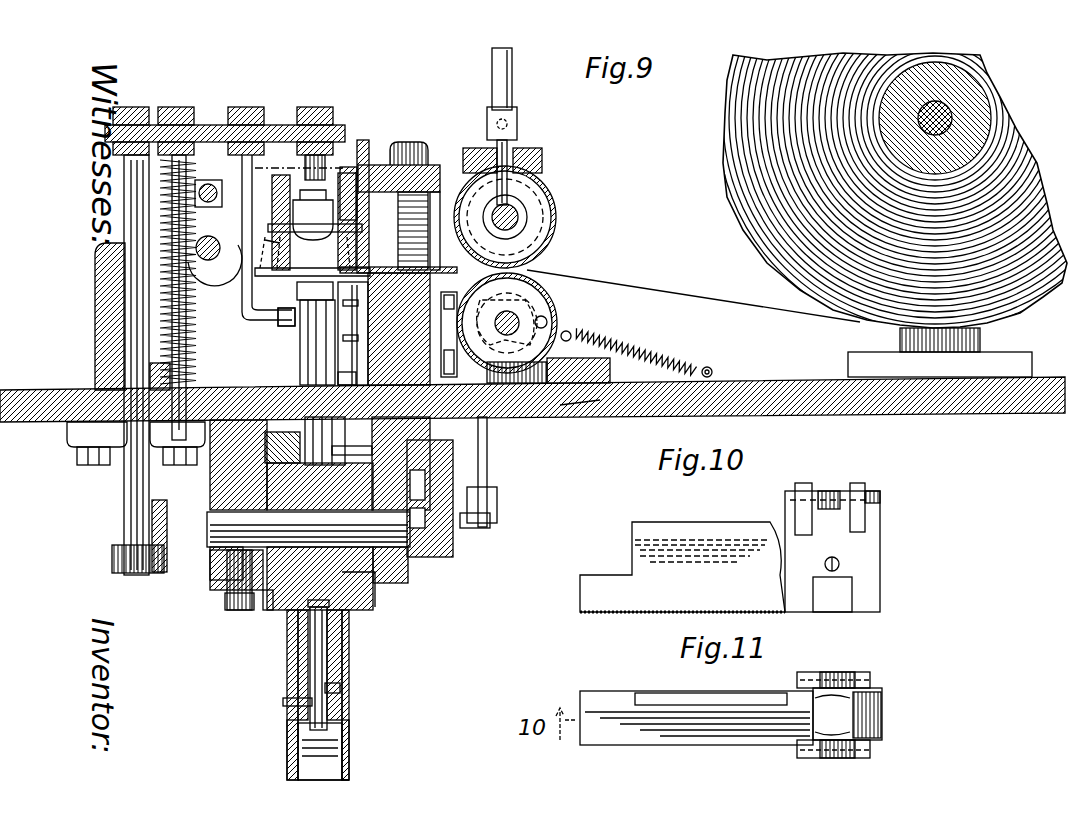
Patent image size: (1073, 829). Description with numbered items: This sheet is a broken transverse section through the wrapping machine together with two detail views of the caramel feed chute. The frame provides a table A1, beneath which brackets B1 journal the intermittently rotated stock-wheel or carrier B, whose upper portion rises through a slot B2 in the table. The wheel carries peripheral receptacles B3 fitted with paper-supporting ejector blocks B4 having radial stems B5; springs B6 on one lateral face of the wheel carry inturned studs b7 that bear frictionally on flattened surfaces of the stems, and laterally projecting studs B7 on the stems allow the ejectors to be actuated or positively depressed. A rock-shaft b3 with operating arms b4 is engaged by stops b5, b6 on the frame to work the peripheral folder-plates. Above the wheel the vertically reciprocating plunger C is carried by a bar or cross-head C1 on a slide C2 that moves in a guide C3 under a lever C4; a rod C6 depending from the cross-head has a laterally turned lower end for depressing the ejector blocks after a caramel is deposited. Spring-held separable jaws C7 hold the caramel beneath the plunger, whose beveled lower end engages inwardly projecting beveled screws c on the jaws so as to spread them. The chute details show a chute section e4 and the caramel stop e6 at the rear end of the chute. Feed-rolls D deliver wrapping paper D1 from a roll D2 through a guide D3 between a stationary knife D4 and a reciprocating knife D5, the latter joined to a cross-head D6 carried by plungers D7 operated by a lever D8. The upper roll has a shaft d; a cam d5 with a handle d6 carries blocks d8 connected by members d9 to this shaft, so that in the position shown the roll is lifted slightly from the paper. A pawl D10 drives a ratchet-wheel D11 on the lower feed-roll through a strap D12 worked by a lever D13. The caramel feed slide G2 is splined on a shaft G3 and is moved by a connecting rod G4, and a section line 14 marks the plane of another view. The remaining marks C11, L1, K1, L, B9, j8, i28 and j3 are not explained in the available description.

In FIG. 9, the table A1 is at (767, 380).
In FIG. 9, the roll D2 is at (740, 275).
In FIG. 9, the wrapping paper D1 is at (695, 298).
In FIG. 9, the bar C1 is at (300, 124).
In FIG. 9, the lever C4 is at (130, 549).
In FIG. 9, the shaft G3 is at (275, 240).
In FIG. 9, the member C6 is at (262, 316).
In FIG. 9, the vertically reciprocating slide C2 is at (132, 323).
In FIG. 9, the guide C3 is at (95, 374).
In FIG. 9, the connecting rod G4 is at (209, 186).
In FIG. 9, the slide G2 is at (212, 266).
In FIG. 9, the section line 14 is at (265, 189).
In FIG. 9, the plunger C is at (338, 165).
In FIG. 9, the inturned studs b7 is at (320, 234).
In FIG. 11, the inturned studs b7 is at (855, 718).
In FIG. 9, the clamp arm C11 is at (278, 243).
In FIG. 9, the vertically reciprocating knife D5 is at (369, 220).
In FIG. 9, the spring-held separable jaws C7 is at (362, 262).
In FIG. 10, the spring-held separable jaws C7 is at (840, 604).
In FIG. 9, the cross-head D6 is at (420, 168).
In FIG. 9, the plungers D7 is at (426, 231).
In FIG. 9, the guide D3 is at (438, 250).
In FIG. 9, the feed-rolls D is at (556, 206).
In FIG. 9, the shaft d is at (516, 218).
In FIG. 9, the handle d6 is at (512, 66).
In FIG. 9, the cam d5 is at (516, 112).
In FIG. 9, the blocks d8 is at (510, 126).
In FIG. 9, the members d9 is at (507, 156).
In FIG. 9, the pawl D10 is at (556, 313).
In FIG. 9, the ejector blocks B4 is at (316, 333).
In FIG. 9, the stationary knife D4 is at (350, 273).
In FIG. 9, the rock-shaft b3 is at (358, 303).
In FIG. 9, the operating arms b4 is at (358, 338).
In FIG. 9, the stop b5 is at (351, 373).
In FIG. 9, the rotary stock-wheel B is at (300, 642).
In FIG. 9, the slot B2 is at (292, 383).
In FIG. 9, the lever boss L1 is at (282, 448).
In FIG. 9, the radial stems B5 is at (312, 350).
In FIG. 9, the springs B6 is at (348, 684).
In FIG. 9, the stop b6 is at (352, 464).
In FIG. 9, the brackets B1 is at (215, 502).
In FIG. 9, the lever D8 is at (455, 560).
In FIG. 9, the strap D12 is at (488, 457).
In FIG. 9, the lever D13 is at (462, 527).
In FIG. 9, the ratchet-wheel D11 is at (580, 406).
In FIG. 9, the clamp block K1 is at (222, 592).
In FIG. 9, the lever L is at (268, 612).
In FIG. 9, the cylinder B9 is at (330, 737).
In FIG. 9, the plunger rod j8 is at (330, 665).
In FIG. 9, the laterally projecting studs B7 is at (292, 362).
In FIG. 9, the cylinder wall i28 is at (290, 766).
In FIG. 9, the peripheral receptacles B3 is at (325, 762).
In FIG. 9, the bracket j3 is at (376, 596).
In FIG. 10, the chute section e4 is at (728, 600).
In FIG. 10, the beveled screws c is at (840, 562).
In FIG. 11, the beveled screws c is at (838, 696).
In FIG. 11, the caramel stop e6 is at (877, 728).